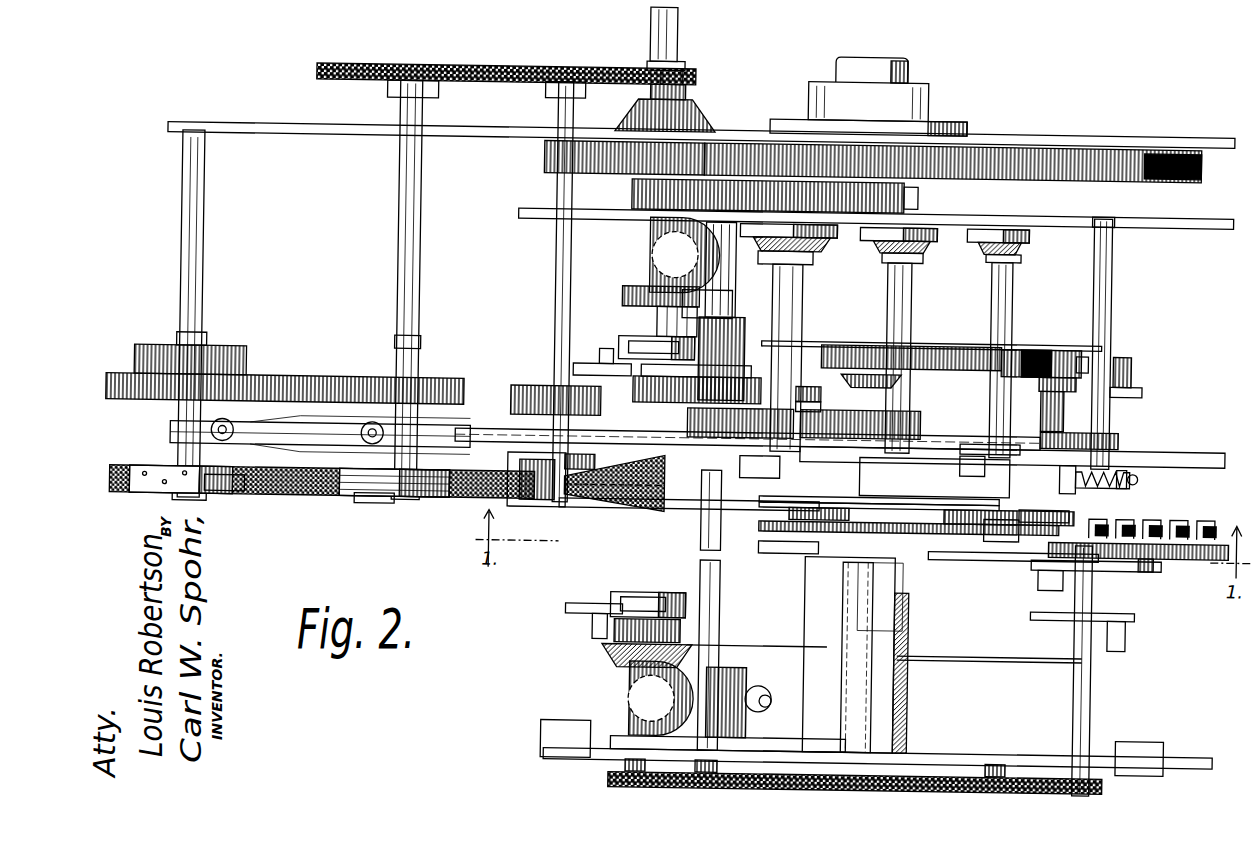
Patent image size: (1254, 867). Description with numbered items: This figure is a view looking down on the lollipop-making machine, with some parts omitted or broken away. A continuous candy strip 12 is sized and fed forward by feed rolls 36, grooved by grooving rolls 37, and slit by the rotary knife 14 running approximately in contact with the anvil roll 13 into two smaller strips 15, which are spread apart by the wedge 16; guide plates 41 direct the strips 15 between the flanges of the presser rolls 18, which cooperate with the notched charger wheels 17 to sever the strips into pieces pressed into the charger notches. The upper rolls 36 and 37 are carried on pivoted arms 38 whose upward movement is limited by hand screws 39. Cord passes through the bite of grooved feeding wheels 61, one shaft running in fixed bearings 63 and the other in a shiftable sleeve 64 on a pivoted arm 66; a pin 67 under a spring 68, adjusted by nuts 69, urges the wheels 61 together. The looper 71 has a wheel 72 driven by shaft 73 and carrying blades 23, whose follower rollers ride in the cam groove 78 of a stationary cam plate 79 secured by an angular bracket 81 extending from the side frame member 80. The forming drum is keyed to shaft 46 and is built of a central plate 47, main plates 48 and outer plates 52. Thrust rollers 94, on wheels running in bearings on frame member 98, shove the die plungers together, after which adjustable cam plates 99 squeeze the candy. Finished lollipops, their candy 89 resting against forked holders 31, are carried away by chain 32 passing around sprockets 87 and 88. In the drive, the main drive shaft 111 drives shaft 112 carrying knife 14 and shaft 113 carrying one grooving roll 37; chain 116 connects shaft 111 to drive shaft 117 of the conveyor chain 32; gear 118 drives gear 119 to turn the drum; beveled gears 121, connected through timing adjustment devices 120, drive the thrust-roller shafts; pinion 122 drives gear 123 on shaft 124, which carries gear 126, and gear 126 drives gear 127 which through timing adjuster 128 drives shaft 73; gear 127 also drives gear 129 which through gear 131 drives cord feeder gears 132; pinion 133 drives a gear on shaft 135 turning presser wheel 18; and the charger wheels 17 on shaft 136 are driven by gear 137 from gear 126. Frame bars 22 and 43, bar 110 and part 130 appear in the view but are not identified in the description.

The candy strip 12 is at (130, 472).
The anvil roll 13 is at (530, 510).
The slitting wheel 14 is at (545, 510).
The smaller strips 15 is at (600, 472).
The wedge 16 is at (592, 510).
The charger wheels 17 is at (780, 462).
The presser rolls 18 is at (760, 545).
The horizontal bar 22 is at (470, 432).
The blades 23 is at (879, 496).
The forked holders 31 is at (1190, 515).
The chain 32 is at (1200, 555).
The feed rolls 36 is at (230, 500).
The grooving rolls 37 is at (375, 508).
The pivoted arms 38 is at (330, 383).
The hand screws 39 is at (233, 420).
The guide plates 41 is at (625, 470).
The top frame bar 43 is at (472, 140).
The shaft 46 is at (912, 628).
The central plate 47 is at (905, 470).
The main plates 48 is at (965, 446).
The outer plates 52 is at (808, 348).
The feeding wheels 61 is at (965, 500).
The fixed bearings 63 is at (987, 240).
The shiftable sleeve 64 is at (1050, 407).
The pivoted arm 66 is at (1075, 427).
The pin 67 is at (1130, 462).
The spring 68 is at (1120, 482).
The nuts 69 is at (1068, 488).
The looper 71 is at (780, 555).
The wheel 72 is at (819, 500).
The shaft 73 is at (850, 615).
The cam groove 78 is at (955, 530).
The cam plate 79 is at (990, 537).
The side frame member 80 is at (1000, 760).
The angular bracket 81 is at (912, 610).
The sprocket 87 is at (1147, 565).
The sprocket 88 is at (1110, 565).
The candy 89 is at (1195, 512).
The thrust rollers 94 is at (760, 685).
The frame member 98 is at (960, 222).
The adjustable cam plates 99 is at (572, 370).
The top bar 110 is at (625, 70).
The main drive shaft 111 is at (671, 44).
The shaft 112 is at (553, 295).
The shaft 113 is at (420, 238).
The chain 116 is at (1110, 784).
The drive shaft 117 is at (1094, 700).
The gear 118 is at (705, 160).
The gear 119 is at (1040, 165).
The timing adjustment devices 120 is at (625, 345).
The beveled gears 121 is at (650, 258).
The pinion 122 is at (628, 192).
The gear 123 is at (905, 198).
The shaft 124 is at (797, 303).
The gear 126 is at (810, 401).
The gear 127 is at (855, 385).
The timing adjuster 128 is at (812, 385).
The gear 129 is at (920, 412).
The flange 130 is at (742, 368).
The gear 131 is at (940, 345).
The cord feeder gears 132 is at (1020, 350).
The pinion 133 is at (640, 390).
The shaft 135 is at (735, 612).
The shaft 136 is at (718, 328).
The gear 137 is at (740, 419).